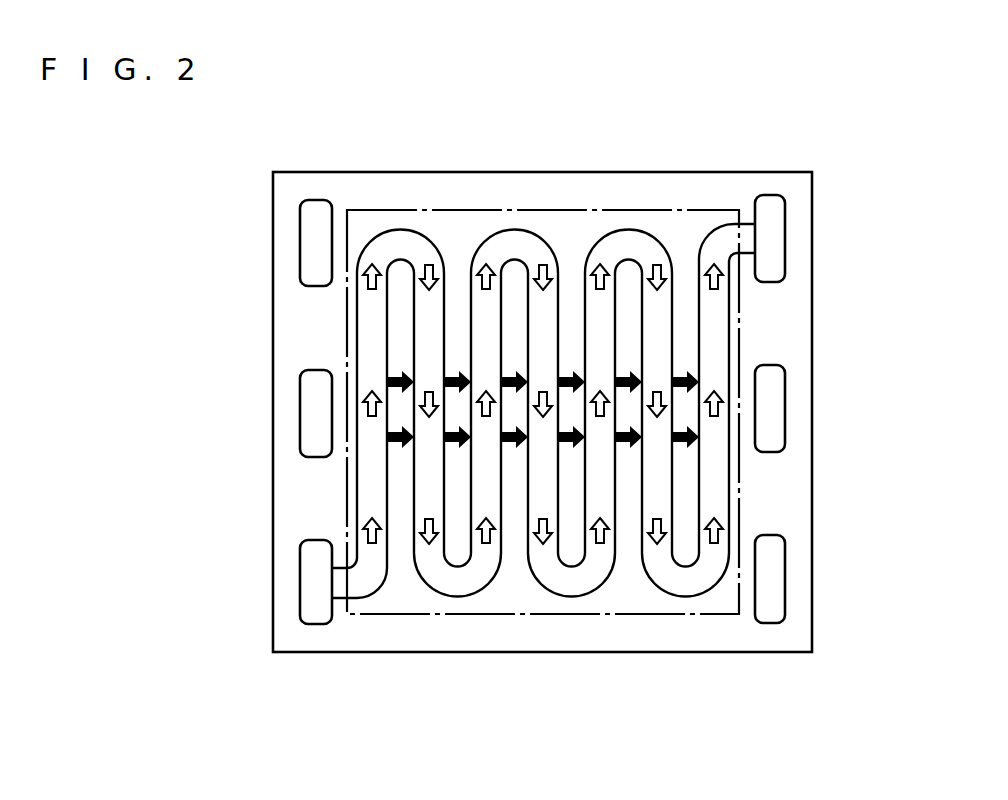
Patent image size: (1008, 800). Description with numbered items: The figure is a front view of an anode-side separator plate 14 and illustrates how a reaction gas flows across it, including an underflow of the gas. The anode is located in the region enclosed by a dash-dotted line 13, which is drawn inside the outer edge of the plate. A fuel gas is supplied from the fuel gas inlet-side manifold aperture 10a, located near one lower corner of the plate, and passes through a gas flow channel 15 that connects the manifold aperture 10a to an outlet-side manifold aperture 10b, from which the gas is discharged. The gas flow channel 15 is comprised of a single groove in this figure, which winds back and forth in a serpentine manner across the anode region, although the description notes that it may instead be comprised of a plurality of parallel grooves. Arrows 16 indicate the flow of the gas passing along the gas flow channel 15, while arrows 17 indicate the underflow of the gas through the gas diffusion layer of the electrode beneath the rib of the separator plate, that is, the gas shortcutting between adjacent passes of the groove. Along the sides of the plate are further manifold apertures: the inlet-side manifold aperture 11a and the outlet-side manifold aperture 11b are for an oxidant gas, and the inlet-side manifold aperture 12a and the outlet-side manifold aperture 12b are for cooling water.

The fuel gas inlet-side manifold aperture 10a is at (313, 607).
The fuel gas outlet-side manifold aperture 10b is at (773, 216).
The inlet-side manifold aperture for oxidant gas 11a is at (313, 236).
The outlet-side manifold aperture for oxidant gas 11b is at (775, 578).
The inlet-side manifold aperture for cooling water 12a is at (312, 418).
The outlet-side manifold aperture for cooling water 12b is at (775, 410).
The dash-dotted line 13 is at (660, 210).
The anode-side separator plate 14 is at (470, 187).
The gas flow channel 15 is at (515, 238).
The arrows 16 is at (710, 520).
The arrows 17 is at (682, 372).